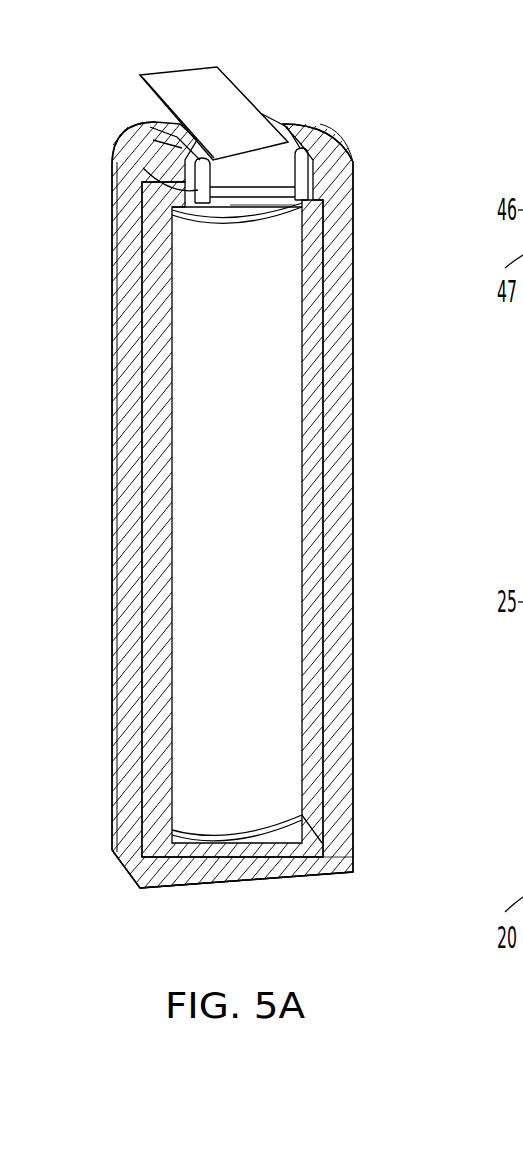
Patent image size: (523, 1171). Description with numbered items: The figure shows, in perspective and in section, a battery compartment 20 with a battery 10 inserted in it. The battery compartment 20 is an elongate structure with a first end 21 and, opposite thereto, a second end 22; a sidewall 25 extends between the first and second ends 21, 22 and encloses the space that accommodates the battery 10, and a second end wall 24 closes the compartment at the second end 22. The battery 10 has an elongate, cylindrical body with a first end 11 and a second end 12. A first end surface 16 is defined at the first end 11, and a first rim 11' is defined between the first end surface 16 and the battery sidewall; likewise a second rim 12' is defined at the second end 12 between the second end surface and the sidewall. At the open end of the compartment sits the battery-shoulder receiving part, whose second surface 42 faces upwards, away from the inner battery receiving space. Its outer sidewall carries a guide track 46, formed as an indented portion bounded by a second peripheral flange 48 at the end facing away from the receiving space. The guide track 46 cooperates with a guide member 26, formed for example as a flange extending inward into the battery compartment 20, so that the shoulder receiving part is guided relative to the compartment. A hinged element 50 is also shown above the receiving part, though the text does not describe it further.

The battery compartment 20 is at (385, 325).
The battery 10 is at (255, 490).
The sidewall 25 is at (342, 527).
The second end 22 is at (350, 860).
The second end wall 24 is at (260, 868).
The first end 21 is at (357, 177).
The guide member 26 is at (195, 200).
The first end 11 is at (177, 236).
The first rim 11' is at (179, 271).
The second end 12 is at (182, 796).
The second rim 12' is at (187, 853).
The second surface 42 is at (226, 85).
The flap 50 is at (178, 80).
The guide track 46 is at (170, 172).
The second peripheral flange 48 is at (180, 142).
The first end surface 16 is at (237, 207).